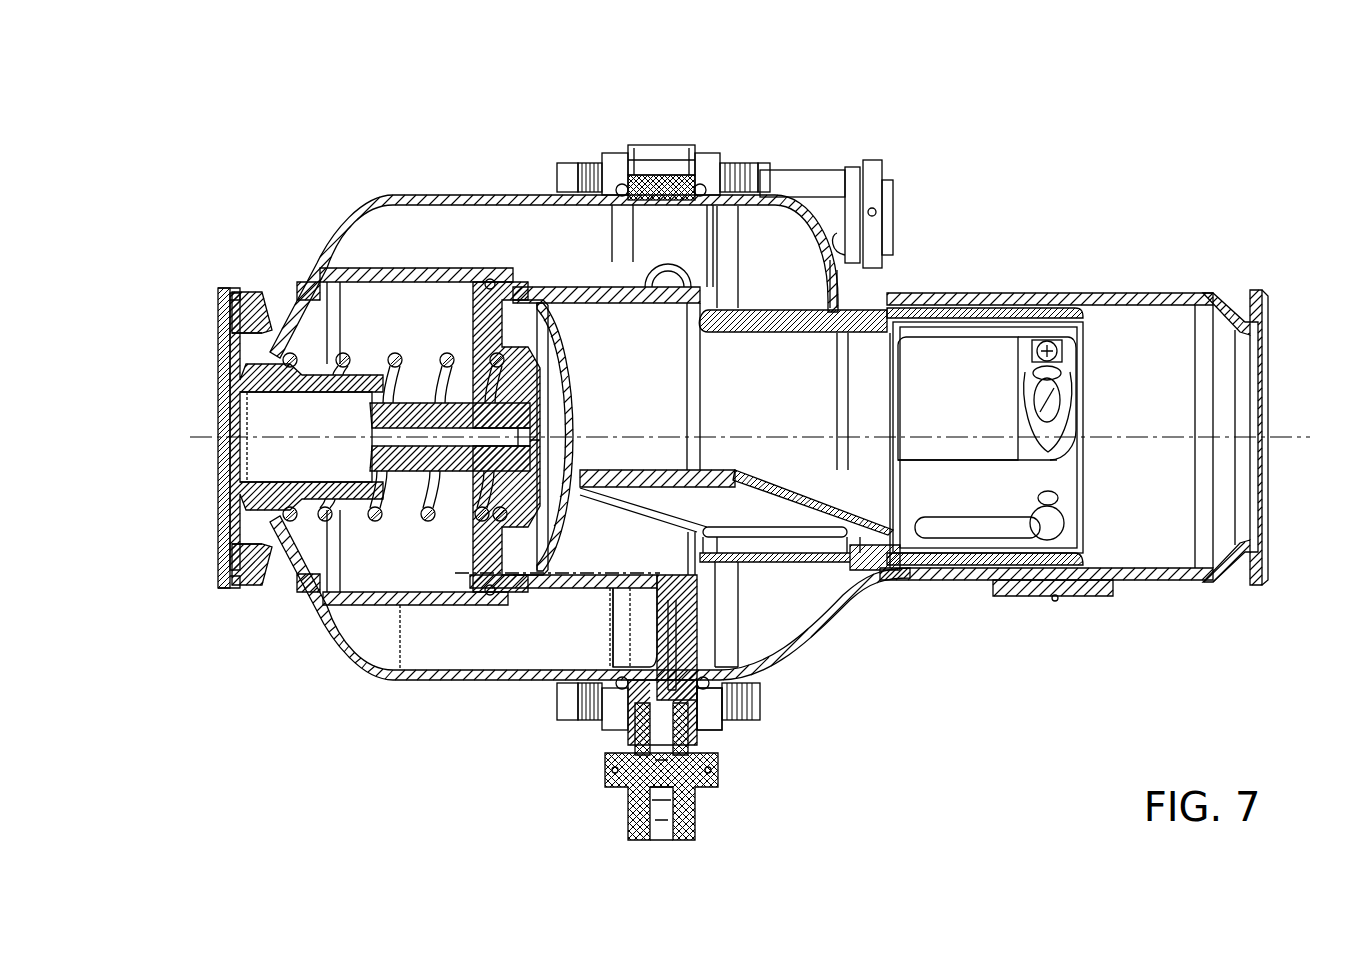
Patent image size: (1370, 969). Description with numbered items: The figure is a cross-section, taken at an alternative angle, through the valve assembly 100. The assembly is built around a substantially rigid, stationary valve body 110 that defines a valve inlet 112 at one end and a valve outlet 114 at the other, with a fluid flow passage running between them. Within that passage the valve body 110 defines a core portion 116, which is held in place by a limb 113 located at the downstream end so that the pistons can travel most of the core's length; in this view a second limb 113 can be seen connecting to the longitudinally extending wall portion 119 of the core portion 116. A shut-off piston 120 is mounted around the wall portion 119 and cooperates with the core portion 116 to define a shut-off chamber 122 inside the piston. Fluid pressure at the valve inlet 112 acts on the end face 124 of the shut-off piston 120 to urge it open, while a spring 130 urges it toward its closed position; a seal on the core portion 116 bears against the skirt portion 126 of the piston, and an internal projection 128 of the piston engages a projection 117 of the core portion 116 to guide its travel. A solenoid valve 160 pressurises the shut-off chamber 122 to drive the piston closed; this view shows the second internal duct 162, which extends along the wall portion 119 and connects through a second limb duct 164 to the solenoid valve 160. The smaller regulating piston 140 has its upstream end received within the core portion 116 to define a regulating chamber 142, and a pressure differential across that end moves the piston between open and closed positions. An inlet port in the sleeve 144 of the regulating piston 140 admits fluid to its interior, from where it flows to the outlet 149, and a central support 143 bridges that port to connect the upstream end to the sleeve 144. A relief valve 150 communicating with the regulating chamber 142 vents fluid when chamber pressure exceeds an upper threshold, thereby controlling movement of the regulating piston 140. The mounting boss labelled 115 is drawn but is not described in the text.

The valve assembly 100 is at (184, 135).
The valve body 110 is at (333, 216).
The valve inlet 112 is at (218, 350).
The limb 113 is at (673, 268).
The valve outlet 114 is at (1272, 371).
The mounting boss 115 is at (1105, 598).
The core portion 116 is at (420, 602).
The projection 117 is at (238, 553).
The wall portion 119 is at (630, 192).
The shut-off piston 120 is at (268, 340).
The shut-off chamber 122 is at (300, 262).
The end face 124 is at (225, 458).
The skirt portion 126 is at (396, 262).
The internal projection 128 is at (247, 398).
The spring 130 is at (355, 470).
The regulating piston 140 is at (547, 292).
The regulating chamber 142 is at (497, 276).
The support 143 is at (762, 505).
The sleeve 144 is at (884, 312).
The outlet 149 is at (1063, 345).
The relief valve 150 is at (806, 187).
The solenoid valve 160 is at (695, 813).
The second internal duct 162 is at (525, 606).
The second limb duct 164 is at (760, 687).